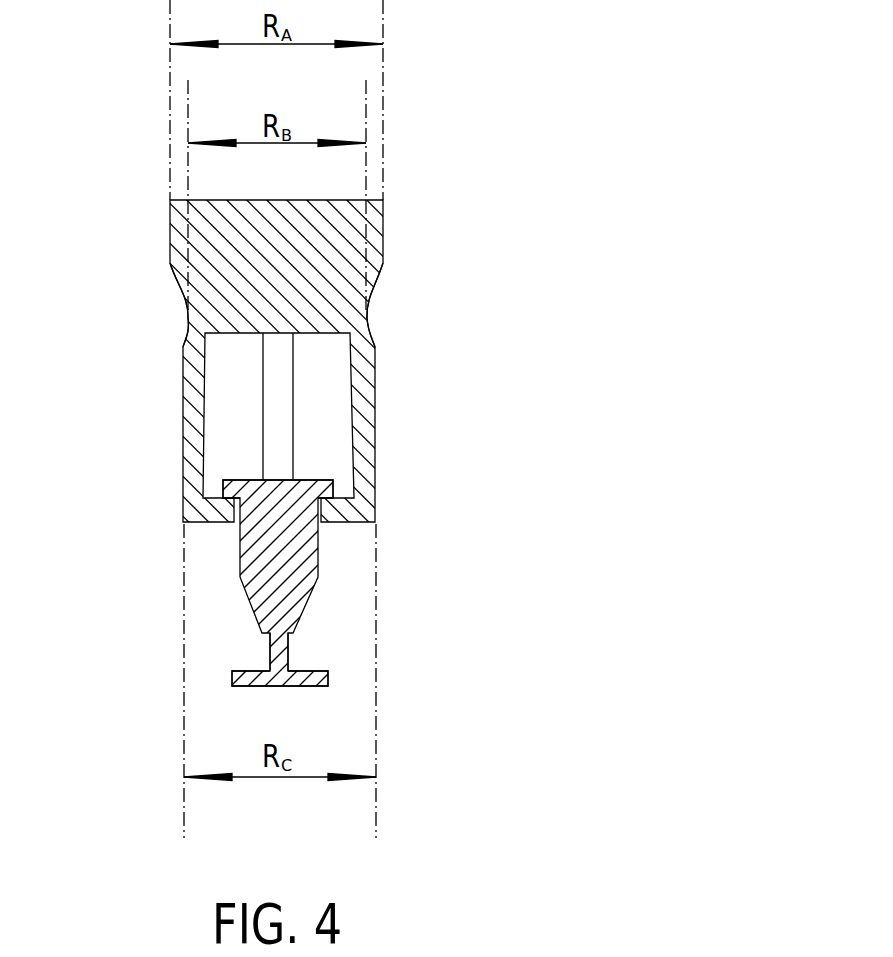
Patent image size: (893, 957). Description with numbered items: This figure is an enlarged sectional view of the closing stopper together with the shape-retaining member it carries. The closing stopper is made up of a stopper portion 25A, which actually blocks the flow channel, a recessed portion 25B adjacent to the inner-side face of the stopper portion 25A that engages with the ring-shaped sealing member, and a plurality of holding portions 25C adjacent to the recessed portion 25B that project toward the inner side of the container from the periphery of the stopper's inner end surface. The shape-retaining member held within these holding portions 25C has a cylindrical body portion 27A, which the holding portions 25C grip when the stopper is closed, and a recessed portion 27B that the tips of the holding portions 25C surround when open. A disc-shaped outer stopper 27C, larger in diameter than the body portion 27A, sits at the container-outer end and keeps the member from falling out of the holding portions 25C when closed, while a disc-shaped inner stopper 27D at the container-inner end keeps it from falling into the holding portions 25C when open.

The stopper portion 25A is at (383, 225).
The recessed portion 25B is at (370, 308).
The holding portions 25C is at (193, 382).
The cylindrical body portion 27A is at (242, 550).
The recessed portion 27B is at (268, 652).
The outer stopper 27C is at (223, 483).
The inner stopper 27D is at (232, 675).